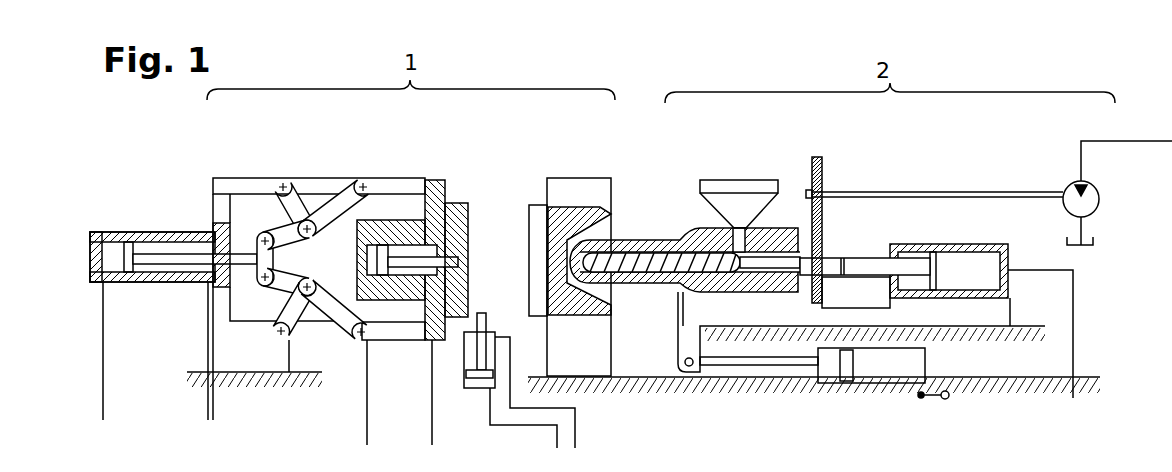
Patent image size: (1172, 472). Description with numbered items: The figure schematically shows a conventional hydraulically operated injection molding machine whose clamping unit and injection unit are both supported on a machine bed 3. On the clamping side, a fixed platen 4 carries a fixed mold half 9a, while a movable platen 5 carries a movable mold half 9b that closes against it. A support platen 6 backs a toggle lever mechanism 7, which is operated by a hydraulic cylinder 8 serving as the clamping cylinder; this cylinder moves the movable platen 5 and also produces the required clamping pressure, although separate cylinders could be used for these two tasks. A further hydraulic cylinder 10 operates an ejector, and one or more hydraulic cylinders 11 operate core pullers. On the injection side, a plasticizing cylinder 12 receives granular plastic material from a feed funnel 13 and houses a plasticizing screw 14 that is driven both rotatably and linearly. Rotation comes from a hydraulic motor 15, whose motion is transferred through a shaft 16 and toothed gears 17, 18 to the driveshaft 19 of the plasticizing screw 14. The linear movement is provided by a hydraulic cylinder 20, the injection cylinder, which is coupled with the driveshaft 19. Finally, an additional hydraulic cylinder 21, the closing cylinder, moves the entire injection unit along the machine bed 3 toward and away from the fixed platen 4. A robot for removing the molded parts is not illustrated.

The machine bed 3 is at (674, 392).
The fixed platen 4 is at (585, 197).
The movable platen 5 is at (388, 190).
The support platen 6 is at (250, 190).
The toggle lever mechanism 7 is at (305, 198).
The hydraulic cylinder 8 is at (123, 232).
The fixed mold half 9a is at (540, 210).
The movable mold half 9b is at (465, 205).
The hydraulic cylinder 10 is at (372, 262).
The hydraulic cylinders 11 is at (478, 388).
The plasticizing cylinder 12 is at (695, 238).
The feed funnel 13 is at (737, 192).
The plasticizing screw 14 is at (612, 260).
The hydraulic motor 15 is at (1087, 203).
The shaft 16 is at (935, 192).
The toothed gear 17 is at (823, 168).
The toothed gear 18 is at (828, 258).
The driveshaft 19 is at (780, 270).
The hydraulic cylinder 20 is at (1010, 258).
The hydraulic cylinder 21 is at (927, 367).